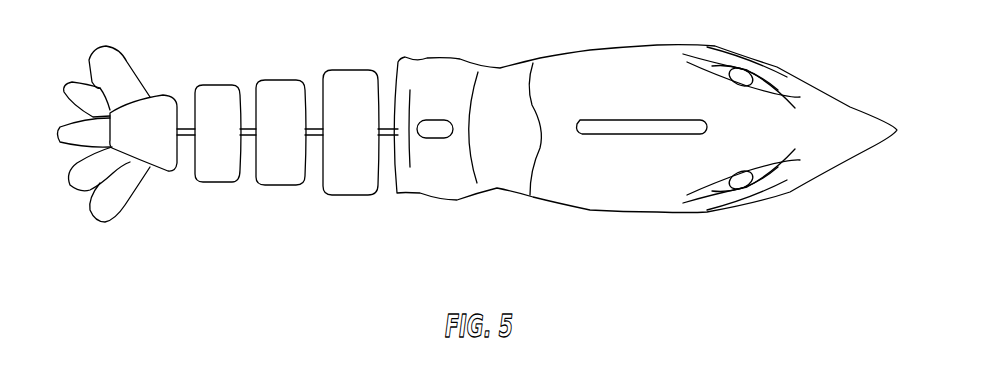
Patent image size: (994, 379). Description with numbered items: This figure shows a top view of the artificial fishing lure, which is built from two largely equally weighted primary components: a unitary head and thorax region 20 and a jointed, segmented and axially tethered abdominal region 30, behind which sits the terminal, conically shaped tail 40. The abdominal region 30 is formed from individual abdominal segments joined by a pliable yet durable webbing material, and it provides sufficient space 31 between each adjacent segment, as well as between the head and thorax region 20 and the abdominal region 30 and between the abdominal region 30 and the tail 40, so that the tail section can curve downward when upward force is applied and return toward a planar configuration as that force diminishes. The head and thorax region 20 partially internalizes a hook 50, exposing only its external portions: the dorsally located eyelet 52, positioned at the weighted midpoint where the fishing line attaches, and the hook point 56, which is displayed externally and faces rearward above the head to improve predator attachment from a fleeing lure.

The unitary head and thorax region 20 is at (808, 139).
The abdominal region 30 is at (193, 50).
The space 31 is at (170, 182).
The tail 40 is at (157, 95).
The hook 50 is at (630, 127).
The eyelet 52 is at (433, 118).
The hook point 56 is at (583, 127).